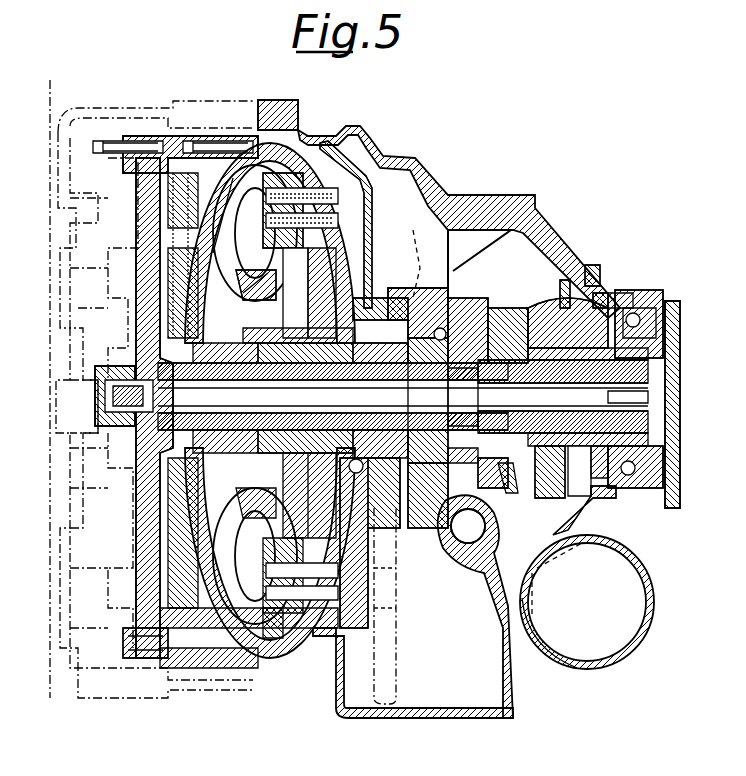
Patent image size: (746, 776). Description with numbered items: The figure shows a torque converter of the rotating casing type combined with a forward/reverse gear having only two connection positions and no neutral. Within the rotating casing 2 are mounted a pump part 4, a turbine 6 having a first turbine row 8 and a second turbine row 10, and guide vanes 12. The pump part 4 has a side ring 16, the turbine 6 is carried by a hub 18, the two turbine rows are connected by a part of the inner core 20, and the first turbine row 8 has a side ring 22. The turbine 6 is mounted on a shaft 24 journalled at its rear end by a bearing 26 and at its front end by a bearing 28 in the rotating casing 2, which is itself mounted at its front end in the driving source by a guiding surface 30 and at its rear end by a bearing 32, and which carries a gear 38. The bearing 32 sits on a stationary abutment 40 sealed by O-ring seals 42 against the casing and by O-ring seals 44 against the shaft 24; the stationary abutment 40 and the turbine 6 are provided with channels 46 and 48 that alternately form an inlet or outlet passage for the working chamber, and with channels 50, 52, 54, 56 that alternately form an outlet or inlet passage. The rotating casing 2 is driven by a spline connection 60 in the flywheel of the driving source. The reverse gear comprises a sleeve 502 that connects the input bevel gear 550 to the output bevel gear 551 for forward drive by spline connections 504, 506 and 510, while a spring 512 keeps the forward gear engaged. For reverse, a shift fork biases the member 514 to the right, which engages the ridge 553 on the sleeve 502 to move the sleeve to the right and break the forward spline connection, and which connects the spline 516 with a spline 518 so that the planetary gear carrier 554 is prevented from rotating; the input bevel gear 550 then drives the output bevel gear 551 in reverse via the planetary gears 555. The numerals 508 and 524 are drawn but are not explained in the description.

The rotating casing 2 is at (290, 185).
The pump part 4 is at (216, 227).
The turbine 6 is at (286, 281).
The first turbine row 8 is at (285, 196).
The second turbine row 10 is at (294, 305).
The guide vanes 12 is at (355, 138).
The side ring 16 is at (258, 186).
The hub 18 is at (285, 318).
The inner core 20 is at (232, 279).
The side ring 22 is at (300, 585).
The shaft 24 is at (478, 438).
The bearing 26 is at (452, 300).
The bearing 28 is at (138, 322).
The guiding surface 30 is at (88, 412).
The bearing 32 is at (372, 365).
The gear 38 is at (390, 522).
The stationary abutment 40 is at (392, 290).
The O-ring seals 42 is at (330, 365).
The O-ring seals 44 is at (490, 302).
The channel 46 is at (442, 562).
The channel 48 is at (290, 320).
The channel 50 is at (410, 250).
The channel 52 is at (425, 360).
The channel 54 is at (222, 398).
The channel 56 is at (188, 375).
The spline connection 60 is at (138, 185).
The sleeve 502 is at (575, 410).
The spline connection 504 is at (432, 405).
The spline connection 506 is at (500, 480).
The bracket 508 is at (600, 500).
The spline connection 510 is at (672, 475).
The spring 512 is at (575, 384).
The member 514 is at (556, 276).
The spline 516 is at (573, 262).
The spline 518 is at (600, 285).
The shaft section 524 is at (295, 368).
The input bevel gear 550 is at (485, 482).
The output bevel gear 551 is at (672, 300).
The ridge 553 is at (668, 432).
The planetary gear carrier 554 is at (636, 286).
The planetary gears 555 is at (600, 276).